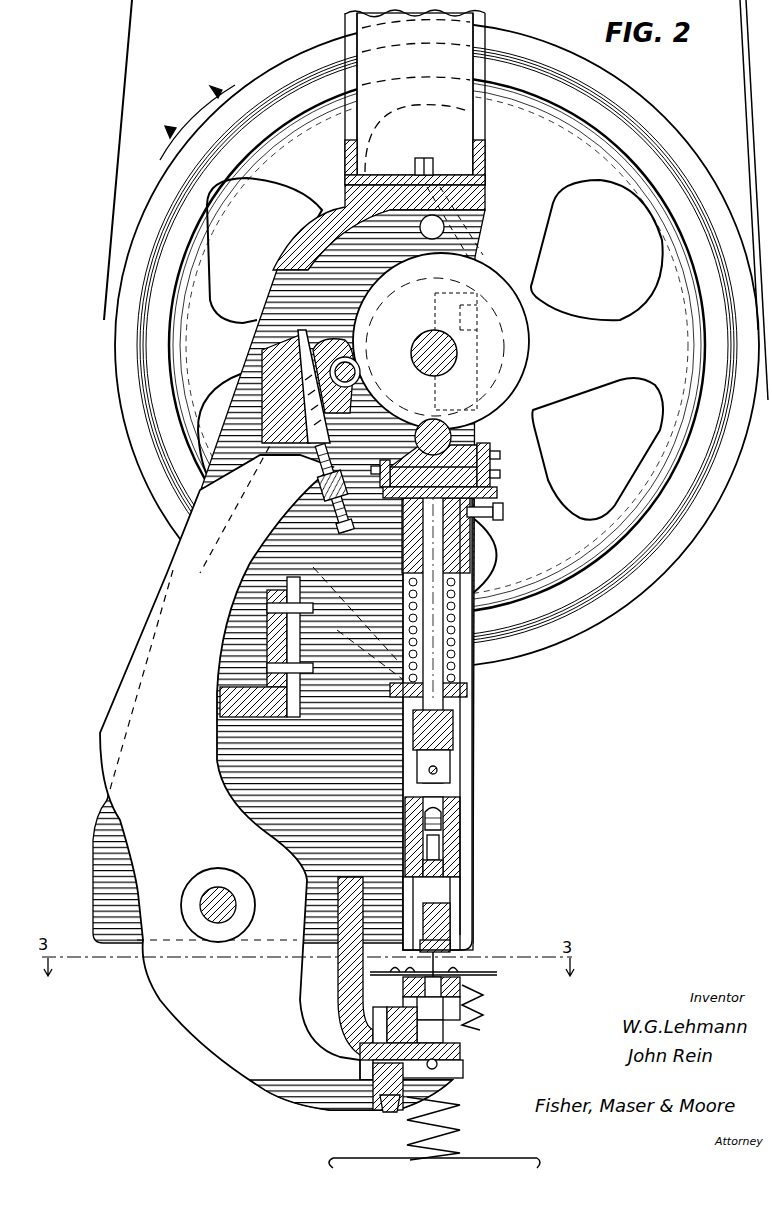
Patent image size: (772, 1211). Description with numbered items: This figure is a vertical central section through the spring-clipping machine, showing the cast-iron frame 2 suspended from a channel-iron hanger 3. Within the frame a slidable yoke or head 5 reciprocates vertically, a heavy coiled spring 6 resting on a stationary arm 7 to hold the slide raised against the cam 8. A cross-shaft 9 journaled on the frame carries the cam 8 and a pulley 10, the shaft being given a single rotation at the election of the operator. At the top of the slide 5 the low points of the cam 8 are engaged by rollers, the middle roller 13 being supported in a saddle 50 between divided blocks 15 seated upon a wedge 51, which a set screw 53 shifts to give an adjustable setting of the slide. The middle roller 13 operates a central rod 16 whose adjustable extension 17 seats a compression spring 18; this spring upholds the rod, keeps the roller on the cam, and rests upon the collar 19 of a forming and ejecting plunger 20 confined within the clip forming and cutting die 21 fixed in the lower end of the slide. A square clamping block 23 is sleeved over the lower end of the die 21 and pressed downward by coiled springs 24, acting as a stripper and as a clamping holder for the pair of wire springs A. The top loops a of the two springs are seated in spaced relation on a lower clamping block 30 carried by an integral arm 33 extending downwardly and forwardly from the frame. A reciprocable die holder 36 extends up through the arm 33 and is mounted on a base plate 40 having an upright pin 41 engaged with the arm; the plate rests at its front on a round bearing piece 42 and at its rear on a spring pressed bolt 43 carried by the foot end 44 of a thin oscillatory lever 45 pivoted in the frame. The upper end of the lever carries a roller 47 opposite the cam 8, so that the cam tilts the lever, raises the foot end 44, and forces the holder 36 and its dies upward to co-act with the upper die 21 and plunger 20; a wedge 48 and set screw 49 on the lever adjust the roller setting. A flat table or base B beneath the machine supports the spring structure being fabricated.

The frame 2 is at (272, 293).
The hanger 3 is at (480, 151).
The slidable yoke or head 5 is at (462, 801).
The coiled spring 6 is at (464, 604).
The stationary arm 7 is at (470, 691).
The cam 8 is at (527, 352).
The cross-shaft 9 is at (411, 350).
The pulley 10 is at (436, 333).
The middle roller 13 is at (430, 422).
The divided block 15 is at (470, 479).
The central rod 16 is at (463, 547).
The adjustable extension 17 is at (455, 784).
The compression spring 18 is at (442, 826).
The collar 19 is at (440, 862).
The forming and ejecting plunger 20 is at (462, 875).
The clip forming and cutting die 21 is at (460, 914).
The clamping ring or block 23 is at (462, 946).
The coiled springs 24 is at (452, 896).
The lower clamping block 30 is at (463, 996).
The arm 33 is at (345, 1020).
The die holder 36 is at (445, 1043).
The base plate 40 is at (461, 1056).
The upright pin 41 is at (372, 1037).
The round bearing piece 42 is at (463, 1073).
The spring pressed bolt 43 is at (372, 1075).
The foot end 44 is at (372, 1115).
The oscillatory lever 45 is at (276, 744).
The roller 47 is at (362, 374).
The wedge 48 is at (300, 447).
The set screw 49 is at (325, 472).
The saddle 50 is at (495, 462).
The wedge 51 is at (498, 496).
The set screw 53 is at (505, 514).
The top loop a is at (500, 973).
The wire spring A is at (480, 1027).
The table or base B is at (423, 1155).